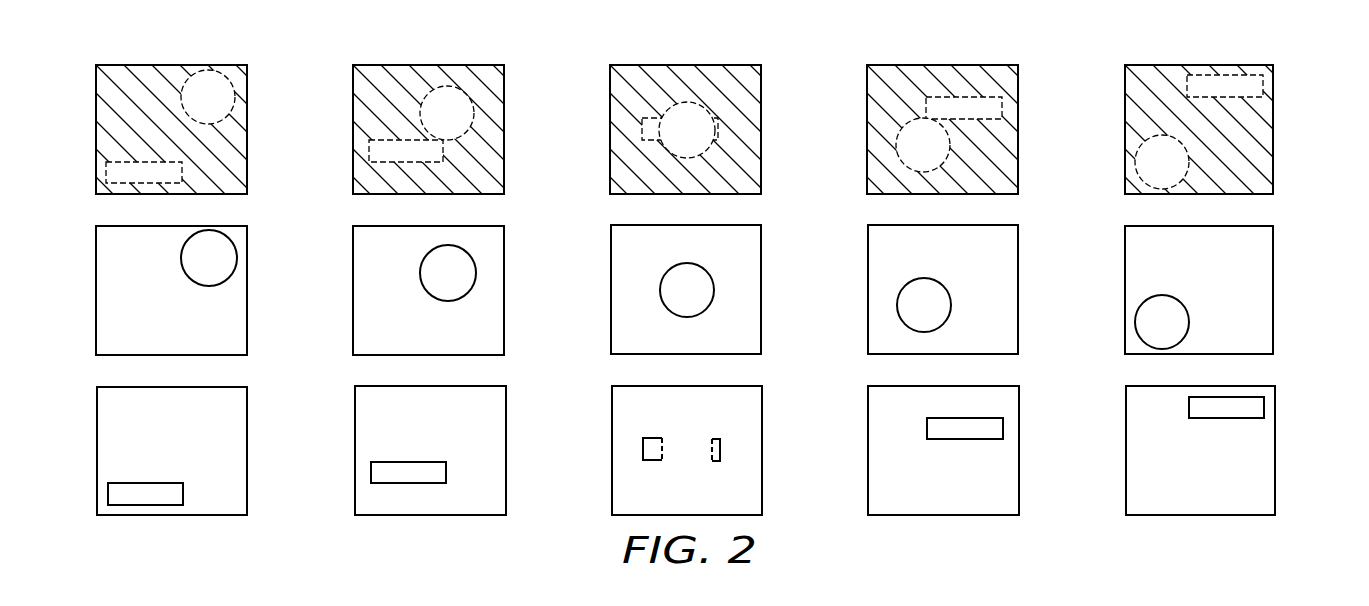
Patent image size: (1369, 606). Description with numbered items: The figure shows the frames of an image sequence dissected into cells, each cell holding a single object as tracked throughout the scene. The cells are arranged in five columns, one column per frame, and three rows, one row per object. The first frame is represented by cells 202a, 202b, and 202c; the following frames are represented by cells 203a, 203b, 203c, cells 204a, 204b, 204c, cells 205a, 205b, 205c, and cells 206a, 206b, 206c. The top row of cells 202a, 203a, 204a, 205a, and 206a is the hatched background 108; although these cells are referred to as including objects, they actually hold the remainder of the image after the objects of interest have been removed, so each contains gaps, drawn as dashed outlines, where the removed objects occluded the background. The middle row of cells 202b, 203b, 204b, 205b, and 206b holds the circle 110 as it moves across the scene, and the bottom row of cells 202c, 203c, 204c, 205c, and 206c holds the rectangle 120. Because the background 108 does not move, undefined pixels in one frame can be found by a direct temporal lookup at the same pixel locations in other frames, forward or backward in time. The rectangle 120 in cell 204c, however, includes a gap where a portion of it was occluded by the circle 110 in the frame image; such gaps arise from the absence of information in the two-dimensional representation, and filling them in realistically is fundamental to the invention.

The background 108 is at (137, 70).
The circle 110 is at (210, 287).
The rectangle 120 is at (137, 480).
The cell 202a is at (131, 106).
The cell 202b is at (96, 298).
The cell 202c is at (97, 458).
The cell 203a is at (353, 138).
The cell 203b is at (353, 298).
The cell 203c is at (355, 458).
The cell 204a is at (761, 136).
The cell 204b is at (761, 296).
The cell 204c is at (762, 457).
The cell 205a is at (1018, 136).
The cell 205b is at (1018, 296).
The cell 205c is at (1019, 457).
The cell 206a is at (1273, 136).
The cell 206b is at (1273, 296).
The cell 206c is at (1275, 457).